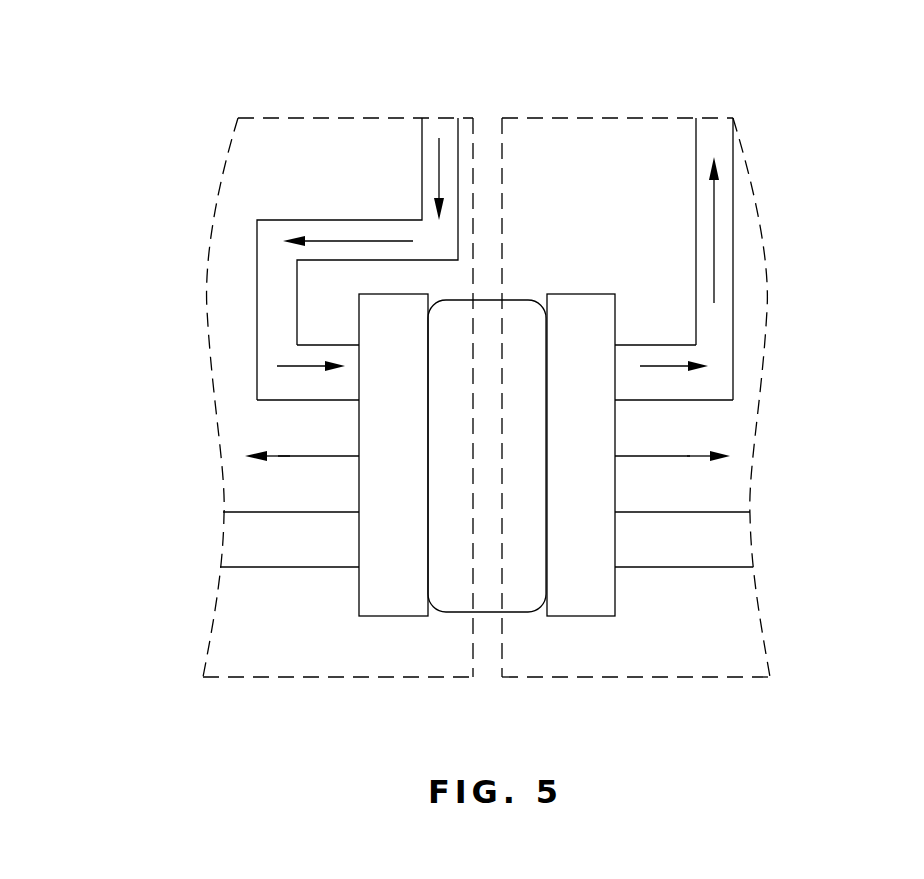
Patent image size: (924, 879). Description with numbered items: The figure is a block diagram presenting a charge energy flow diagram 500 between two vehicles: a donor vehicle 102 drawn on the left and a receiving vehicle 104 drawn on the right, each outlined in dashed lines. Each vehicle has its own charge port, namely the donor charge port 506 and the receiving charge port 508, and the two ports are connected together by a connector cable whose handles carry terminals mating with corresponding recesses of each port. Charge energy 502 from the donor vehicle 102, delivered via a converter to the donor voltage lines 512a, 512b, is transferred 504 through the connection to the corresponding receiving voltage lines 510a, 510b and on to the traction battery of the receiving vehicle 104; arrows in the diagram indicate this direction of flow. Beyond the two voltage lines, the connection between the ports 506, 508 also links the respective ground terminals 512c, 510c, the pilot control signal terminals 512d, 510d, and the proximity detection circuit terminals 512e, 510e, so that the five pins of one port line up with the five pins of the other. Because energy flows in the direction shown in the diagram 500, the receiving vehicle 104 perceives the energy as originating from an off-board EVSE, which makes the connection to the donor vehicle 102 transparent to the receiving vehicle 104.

The donor vehicle 102 is at (379, 117).
The receiving vehicle 104 is at (563, 117).
The charge energy flow diagram 500 is at (810, 152).
The charge energy 502 is at (440, 172).
The transfer of charge energy 504 is at (715, 237).
The donor vehicle charge port 506 is at (387, 617).
The receiving vehicle charge port 508 is at (575, 617).
The receiving voltage line 510a is at (686, 345).
The receiving voltage line 510b is at (700, 400).
The ground terminal 510c is at (686, 455).
The pilot control signal terminal 510d is at (718, 512).
The proximity detection circuit terminal 510e is at (718, 567).
The voltage line 512a is at (312, 346).
The voltage line 512b is at (272, 401).
The ground terminal 512c is at (290, 458).
The pilot control signal terminal 512d is at (248, 513).
The proximity detection circuit terminal 512e is at (248, 568).